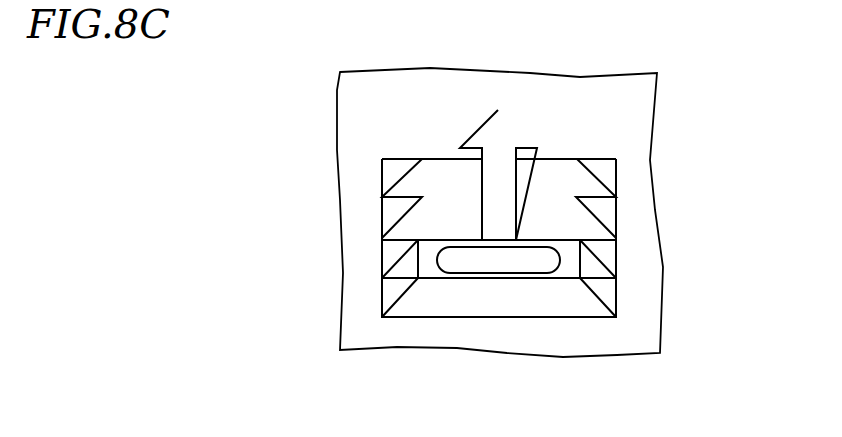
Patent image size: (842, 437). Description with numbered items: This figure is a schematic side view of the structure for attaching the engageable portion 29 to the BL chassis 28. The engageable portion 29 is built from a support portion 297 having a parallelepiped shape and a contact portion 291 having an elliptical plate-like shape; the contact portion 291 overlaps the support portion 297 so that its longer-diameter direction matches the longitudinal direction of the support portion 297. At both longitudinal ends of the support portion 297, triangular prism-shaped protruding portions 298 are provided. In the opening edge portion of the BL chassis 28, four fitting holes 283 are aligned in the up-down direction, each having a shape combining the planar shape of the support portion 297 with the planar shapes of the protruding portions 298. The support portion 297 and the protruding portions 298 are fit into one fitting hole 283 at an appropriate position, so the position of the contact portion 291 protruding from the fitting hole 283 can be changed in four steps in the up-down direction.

The BL chassis 28 is at (347, 178).
The fitting hole 283 is at (412, 172).
The engageable portion 29 is at (561, 241).
The support portion 297 is at (563, 270).
The contact portion 291 is at (493, 265).
The protruding portion 298 is at (407, 267).